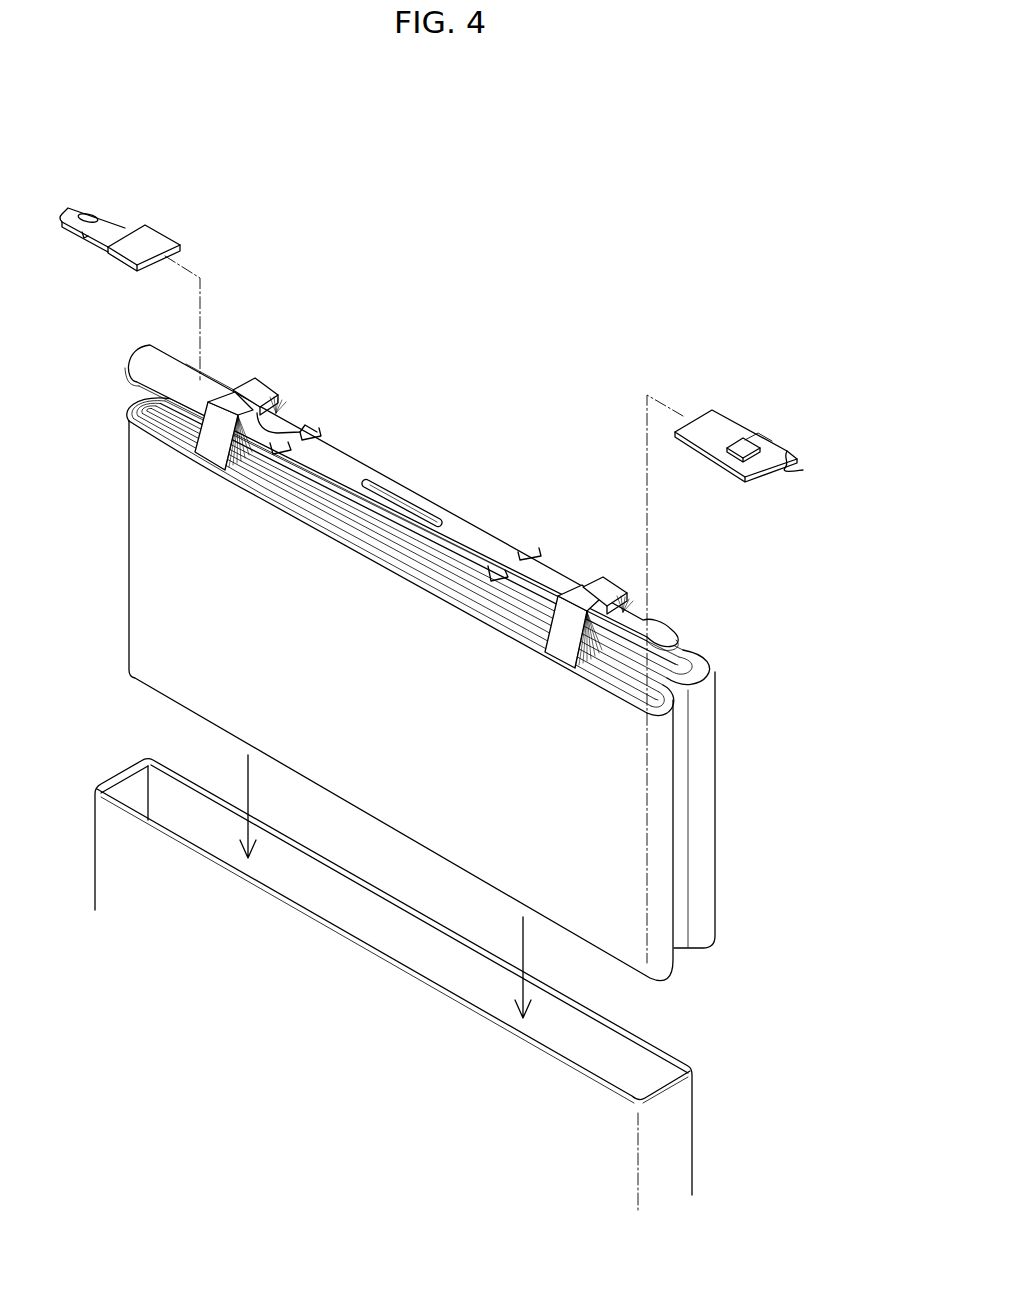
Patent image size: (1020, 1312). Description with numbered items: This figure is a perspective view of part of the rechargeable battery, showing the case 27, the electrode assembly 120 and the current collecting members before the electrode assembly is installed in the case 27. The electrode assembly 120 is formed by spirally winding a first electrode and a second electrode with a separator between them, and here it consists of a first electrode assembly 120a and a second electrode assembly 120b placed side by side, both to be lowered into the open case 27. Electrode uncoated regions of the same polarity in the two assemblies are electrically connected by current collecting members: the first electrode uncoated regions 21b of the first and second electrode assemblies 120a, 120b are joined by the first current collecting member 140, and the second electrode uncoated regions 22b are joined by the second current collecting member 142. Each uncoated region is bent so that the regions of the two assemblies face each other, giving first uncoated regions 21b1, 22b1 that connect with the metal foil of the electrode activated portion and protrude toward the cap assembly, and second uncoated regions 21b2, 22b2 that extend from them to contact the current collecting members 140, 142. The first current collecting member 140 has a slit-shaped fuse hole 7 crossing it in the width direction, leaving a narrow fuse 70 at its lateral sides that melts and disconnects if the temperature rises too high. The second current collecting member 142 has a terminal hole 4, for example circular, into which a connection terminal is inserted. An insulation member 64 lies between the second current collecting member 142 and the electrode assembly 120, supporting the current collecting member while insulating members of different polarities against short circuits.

The terminal hole 4 is at (92, 213).
The second current collecting member 142 is at (155, 236).
The second electrode uncoated region 22b is at (270, 368).
The first uncoated region 22b1 is at (222, 416).
The second uncoated region 22b2 is at (287, 420).
The insulation member 64 is at (350, 462).
The fuse hole 7 is at (736, 442).
The fuse 70 is at (757, 440).
The first current collecting member 140 is at (739, 453).
The first electrode uncoated region 21b is at (679, 619).
The first uncoated region 21b1 is at (567, 639).
The second uncoated region 21b2 is at (583, 602).
The electrode assembly 120 is at (466, 718).
The first electrode assembly 120a is at (663, 960).
The second electrode assembly 120b is at (713, 938).
The case 27 is at (681, 1141).